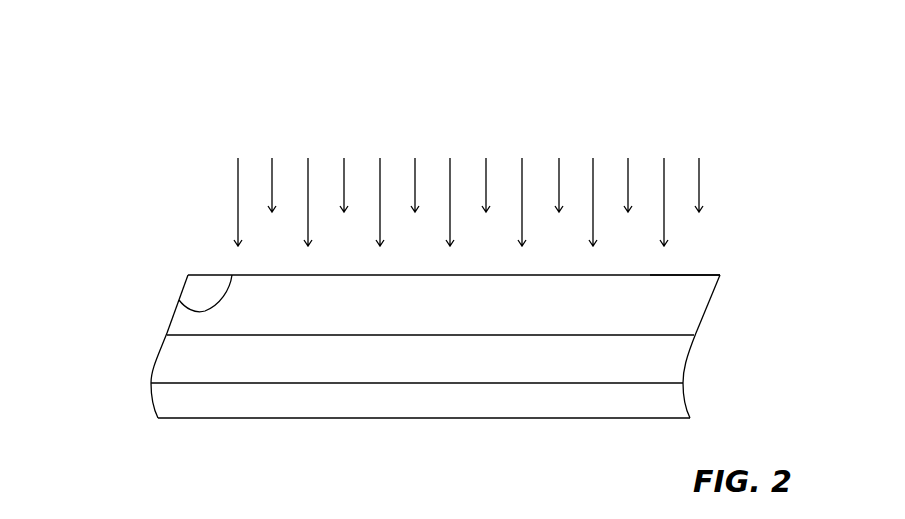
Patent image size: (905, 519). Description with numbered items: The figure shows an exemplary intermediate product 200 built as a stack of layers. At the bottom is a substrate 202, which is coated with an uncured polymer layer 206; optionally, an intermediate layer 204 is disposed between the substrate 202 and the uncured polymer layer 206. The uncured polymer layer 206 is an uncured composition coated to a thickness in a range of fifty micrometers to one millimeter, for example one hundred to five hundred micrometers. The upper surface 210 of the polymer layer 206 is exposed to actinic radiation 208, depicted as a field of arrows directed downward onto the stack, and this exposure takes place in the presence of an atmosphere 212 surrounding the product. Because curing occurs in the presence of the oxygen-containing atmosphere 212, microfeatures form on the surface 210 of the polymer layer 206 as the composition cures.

The intermediate product 200 is at (178, 243).
The substrate 202 is at (672, 403).
The intermediate layer 204 is at (672, 350).
The uncured polymer layer 206 is at (700, 299).
The actinic radiation 208 is at (198, 146).
The surface 210 is at (192, 307).
The atmosphere 212 is at (710, 244).